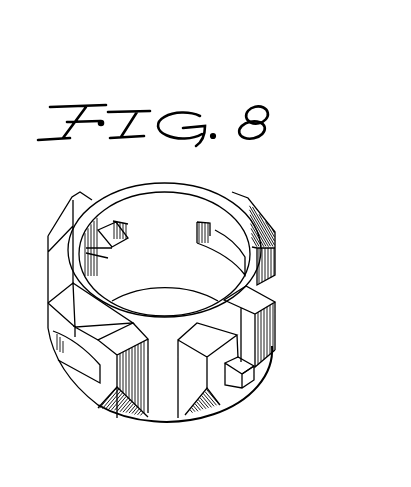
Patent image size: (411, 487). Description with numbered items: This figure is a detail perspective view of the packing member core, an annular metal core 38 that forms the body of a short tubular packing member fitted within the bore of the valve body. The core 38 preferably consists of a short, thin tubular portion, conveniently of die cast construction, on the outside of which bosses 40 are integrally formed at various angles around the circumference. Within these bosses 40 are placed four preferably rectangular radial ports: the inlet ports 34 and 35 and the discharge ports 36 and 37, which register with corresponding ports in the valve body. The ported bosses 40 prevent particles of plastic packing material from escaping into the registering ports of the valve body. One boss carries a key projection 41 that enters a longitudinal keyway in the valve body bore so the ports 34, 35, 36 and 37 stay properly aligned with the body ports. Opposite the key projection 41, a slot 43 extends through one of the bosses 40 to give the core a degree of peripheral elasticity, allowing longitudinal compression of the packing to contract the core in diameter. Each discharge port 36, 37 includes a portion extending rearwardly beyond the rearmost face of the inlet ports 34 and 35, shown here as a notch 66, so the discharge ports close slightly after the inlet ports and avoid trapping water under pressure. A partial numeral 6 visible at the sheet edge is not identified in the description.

The inlet port 34 is at (75, 358).
The inlet port 35 is at (217, 250).
The discharge port 36 is at (112, 246).
The discharge port 37 is at (237, 390).
The annular metal core 38 is at (180, 207).
The boss 40 is at (97, 387).
The key projection 41 is at (258, 320).
The slot 43 is at (72, 198).
The notch 66 is at (244, 375).
The partial numeral 6 is at (6, 262).